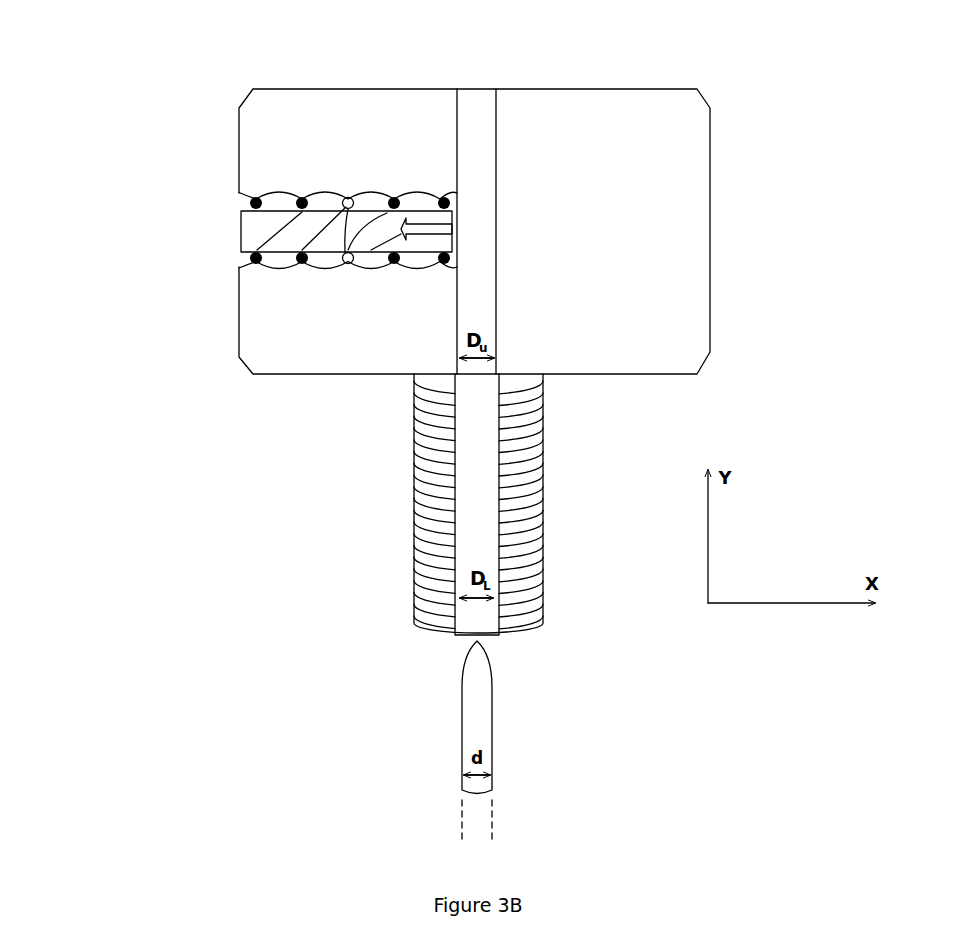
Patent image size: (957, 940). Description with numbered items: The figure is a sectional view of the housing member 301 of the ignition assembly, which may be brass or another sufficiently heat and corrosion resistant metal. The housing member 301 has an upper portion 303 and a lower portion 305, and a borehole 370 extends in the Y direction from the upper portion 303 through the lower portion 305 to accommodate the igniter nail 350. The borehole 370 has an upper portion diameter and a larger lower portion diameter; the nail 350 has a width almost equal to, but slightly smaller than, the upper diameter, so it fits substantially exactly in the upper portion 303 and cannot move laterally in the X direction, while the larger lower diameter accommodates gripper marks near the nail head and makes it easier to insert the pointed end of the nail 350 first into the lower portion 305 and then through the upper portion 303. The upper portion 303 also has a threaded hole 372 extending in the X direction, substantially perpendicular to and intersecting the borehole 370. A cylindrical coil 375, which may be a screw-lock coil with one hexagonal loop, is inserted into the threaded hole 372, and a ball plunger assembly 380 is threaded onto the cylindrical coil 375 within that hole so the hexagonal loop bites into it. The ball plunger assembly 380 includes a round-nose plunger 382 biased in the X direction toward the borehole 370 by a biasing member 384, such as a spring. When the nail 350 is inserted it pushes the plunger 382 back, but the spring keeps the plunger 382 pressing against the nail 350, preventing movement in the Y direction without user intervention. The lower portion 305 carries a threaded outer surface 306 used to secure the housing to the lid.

The housing member 301 is at (713, 160).
The upper portion 303 is at (108, 87).
The lower portion 305 is at (287, 377).
The threaded outer surface 306 is at (414, 574).
The igniter nail 350 is at (492, 716).
The borehole 370 is at (498, 110).
The threaded hole 372 is at (280, 195).
The cylindrical coil 375 is at (393, 197).
The ball plunger assembly 380 is at (239, 233).
The round-nose plunger 382 is at (452, 231).
The biasing member 384 is at (302, 212).